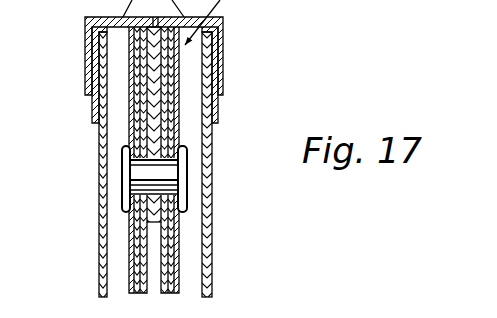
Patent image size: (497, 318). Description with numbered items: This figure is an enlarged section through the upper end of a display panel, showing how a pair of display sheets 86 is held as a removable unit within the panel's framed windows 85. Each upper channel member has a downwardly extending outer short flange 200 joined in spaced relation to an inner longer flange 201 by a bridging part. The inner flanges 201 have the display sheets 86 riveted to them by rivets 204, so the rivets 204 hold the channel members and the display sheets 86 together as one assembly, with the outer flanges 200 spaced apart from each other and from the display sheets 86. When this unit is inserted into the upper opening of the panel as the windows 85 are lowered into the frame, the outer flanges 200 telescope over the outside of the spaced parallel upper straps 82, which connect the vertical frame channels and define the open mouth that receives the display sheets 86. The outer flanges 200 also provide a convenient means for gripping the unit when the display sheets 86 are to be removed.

The outer short flange 200 is at (85, 83).
The strap 82 is at (95, 112).
The framed window 85 is at (99, 225).
The inner longer flange 201 is at (148, 137).
The display card 86 is at (178, 253).
The rivet 204 is at (187, 182).